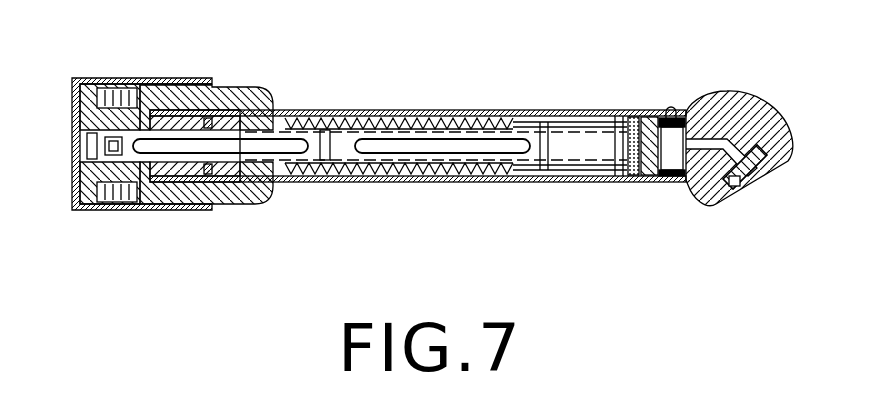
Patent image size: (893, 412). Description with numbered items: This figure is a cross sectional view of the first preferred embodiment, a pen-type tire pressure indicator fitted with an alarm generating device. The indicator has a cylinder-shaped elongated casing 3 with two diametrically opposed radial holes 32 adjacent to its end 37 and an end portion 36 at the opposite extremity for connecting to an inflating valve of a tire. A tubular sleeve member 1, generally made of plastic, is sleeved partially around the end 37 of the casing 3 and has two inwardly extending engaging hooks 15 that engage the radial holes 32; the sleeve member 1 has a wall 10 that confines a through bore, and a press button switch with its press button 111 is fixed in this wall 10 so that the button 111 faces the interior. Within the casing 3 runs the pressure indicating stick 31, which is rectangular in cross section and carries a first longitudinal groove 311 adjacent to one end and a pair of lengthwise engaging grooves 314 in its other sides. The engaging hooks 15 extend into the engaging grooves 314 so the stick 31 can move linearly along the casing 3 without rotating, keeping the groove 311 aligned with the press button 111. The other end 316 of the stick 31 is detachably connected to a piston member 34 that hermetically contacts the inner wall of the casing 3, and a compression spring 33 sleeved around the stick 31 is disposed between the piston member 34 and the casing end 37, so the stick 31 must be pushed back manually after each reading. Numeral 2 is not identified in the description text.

The tubular sleeve member 1 is at (416, 140).
The end cap 2 is at (133, 78).
The elongated casing 3 is at (472, 98).
The wall 10 is at (76, 178).
The engaging hooks 15 is at (253, 198).
The pressure indicating stick 31 is at (560, 152).
The radial holes 32 is at (241, 130).
The compression spring 33 is at (487, 180).
The piston member 34 is at (655, 117).
The end portion 36 is at (750, 184).
The end of the elongated casing 37 is at (176, 54).
The press button 111 is at (113, 155).
The first longitudinal groove 311 is at (187, 148).
The engaging grooves 314 is at (303, 178).
The other end of the pressure indicating stick 316 is at (627, 119).